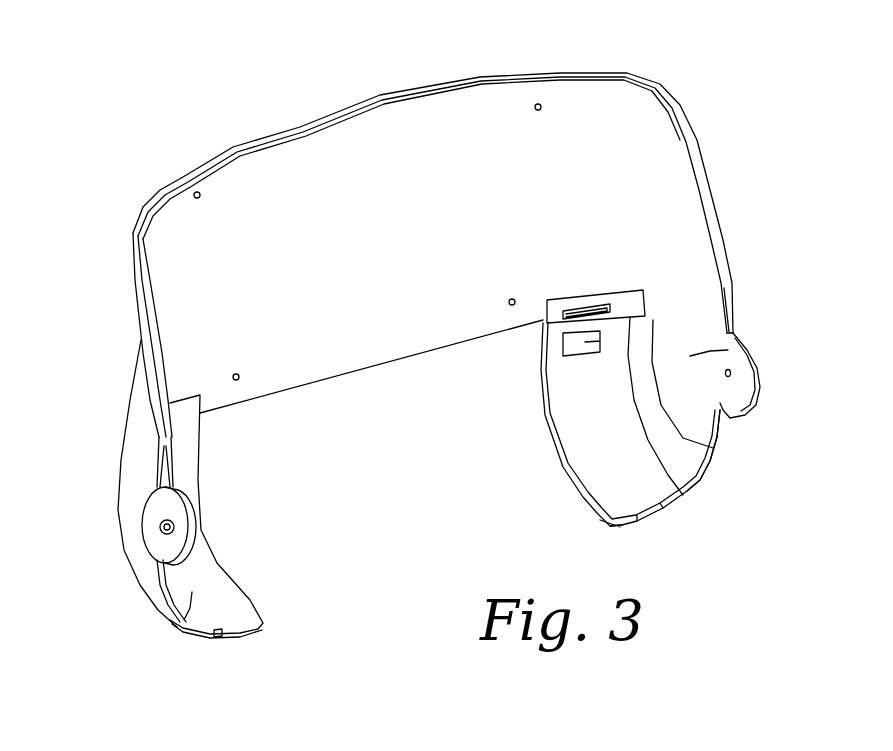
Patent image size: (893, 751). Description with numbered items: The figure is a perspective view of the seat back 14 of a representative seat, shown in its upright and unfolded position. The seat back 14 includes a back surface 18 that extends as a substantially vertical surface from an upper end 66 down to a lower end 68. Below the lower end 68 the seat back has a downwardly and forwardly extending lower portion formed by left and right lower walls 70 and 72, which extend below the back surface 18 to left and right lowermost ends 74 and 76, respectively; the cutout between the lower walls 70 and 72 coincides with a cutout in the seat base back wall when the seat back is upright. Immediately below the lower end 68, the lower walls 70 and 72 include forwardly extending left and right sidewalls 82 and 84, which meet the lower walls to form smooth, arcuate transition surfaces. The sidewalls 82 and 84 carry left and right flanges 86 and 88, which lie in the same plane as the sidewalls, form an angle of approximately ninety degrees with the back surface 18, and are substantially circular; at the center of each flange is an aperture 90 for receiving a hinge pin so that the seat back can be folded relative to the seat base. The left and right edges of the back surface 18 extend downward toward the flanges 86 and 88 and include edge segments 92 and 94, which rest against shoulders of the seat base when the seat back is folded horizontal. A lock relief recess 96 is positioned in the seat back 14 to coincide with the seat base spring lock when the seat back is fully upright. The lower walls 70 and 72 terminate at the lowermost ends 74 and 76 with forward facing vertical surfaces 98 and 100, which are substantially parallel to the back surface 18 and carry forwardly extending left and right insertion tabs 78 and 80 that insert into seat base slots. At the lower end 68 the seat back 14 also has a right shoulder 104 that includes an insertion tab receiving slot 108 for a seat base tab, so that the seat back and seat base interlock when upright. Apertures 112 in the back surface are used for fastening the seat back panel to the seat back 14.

The seat back 14 is at (721, 145).
The back surface 18 is at (190, 230).
The upper end 66 is at (360, 102).
The lower end 68 is at (343, 373).
The left lower wall 70 is at (213, 552).
The right lower wall 72 is at (547, 418).
The left lowermost end 74 is at (262, 627).
The right lowermost end 76 is at (617, 527).
The left insertion tab 78 is at (238, 633).
The right insertion tab 80 is at (658, 510).
The left sidewall 82 is at (130, 492).
The right sidewall 84 is at (746, 348).
The left flange 86 is at (152, 520).
The right flange 88 is at (742, 393).
The aperture 90 is at (162, 530).
The left edge segment 92 is at (163, 473).
The right edge segment 94 is at (732, 313).
The lock relief recess 96 is at (652, 308).
The left forward facing vertical surface 98 is at (180, 623).
The right forward facing vertical surface 100 is at (707, 483).
The right shoulder 104 is at (577, 313).
The insertion tab receiving slot 108 is at (597, 340).
The aperture 112 is at (200, 192).